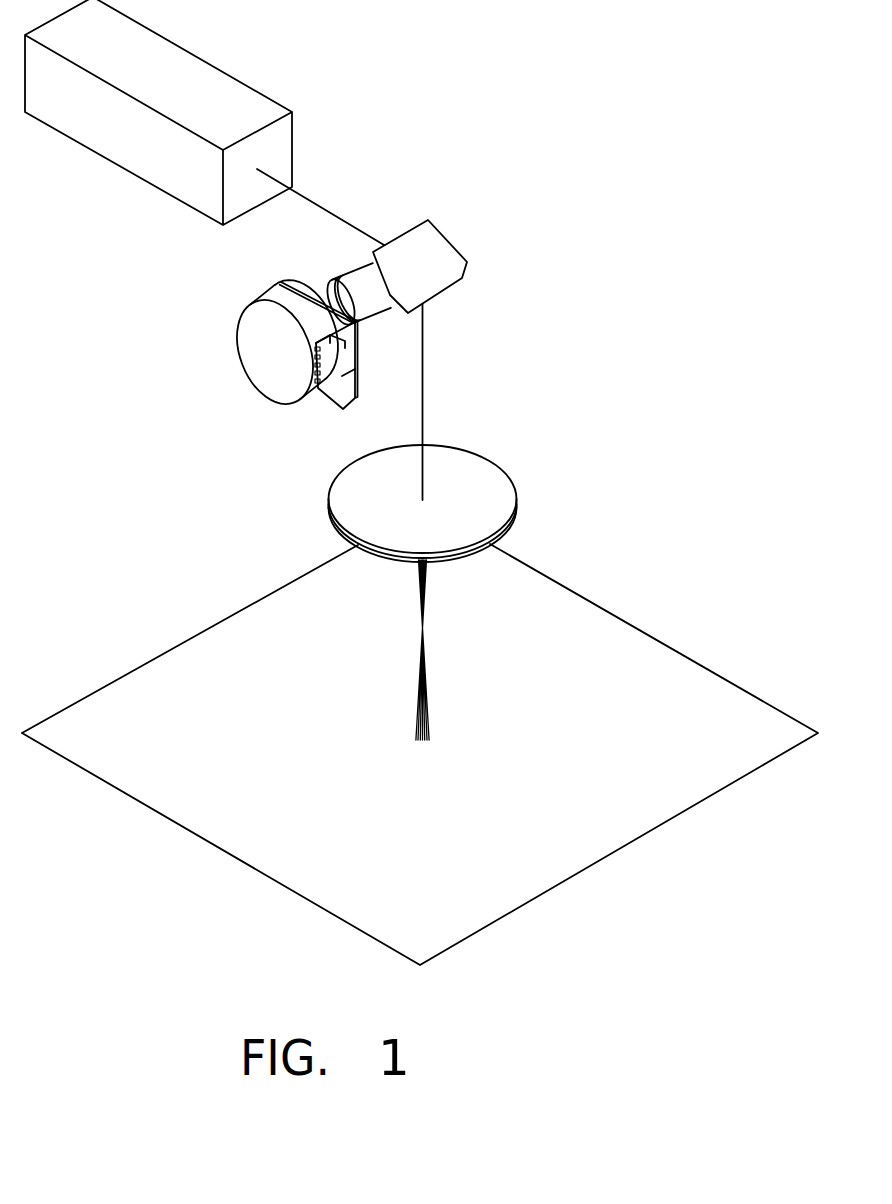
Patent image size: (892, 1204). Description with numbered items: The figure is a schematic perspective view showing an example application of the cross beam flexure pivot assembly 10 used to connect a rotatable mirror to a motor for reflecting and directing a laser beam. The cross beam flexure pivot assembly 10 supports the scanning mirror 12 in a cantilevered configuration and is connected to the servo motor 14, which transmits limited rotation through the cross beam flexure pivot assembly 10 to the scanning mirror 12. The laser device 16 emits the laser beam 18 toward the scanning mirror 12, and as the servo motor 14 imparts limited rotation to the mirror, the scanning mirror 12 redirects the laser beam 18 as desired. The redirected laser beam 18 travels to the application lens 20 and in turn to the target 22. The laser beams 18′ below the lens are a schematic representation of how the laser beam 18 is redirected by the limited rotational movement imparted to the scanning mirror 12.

The cross beam flexure pivot assembly 10 is at (326, 262).
The scanning mirror 12 is at (430, 245).
The servo motor 14 is at (250, 332).
The laser device 16 is at (147, 57).
The laser beam 18 is at (297, 190).
The laser beams 18′ is at (434, 647).
The application lens 20 is at (497, 467).
The target 22 is at (617, 673).